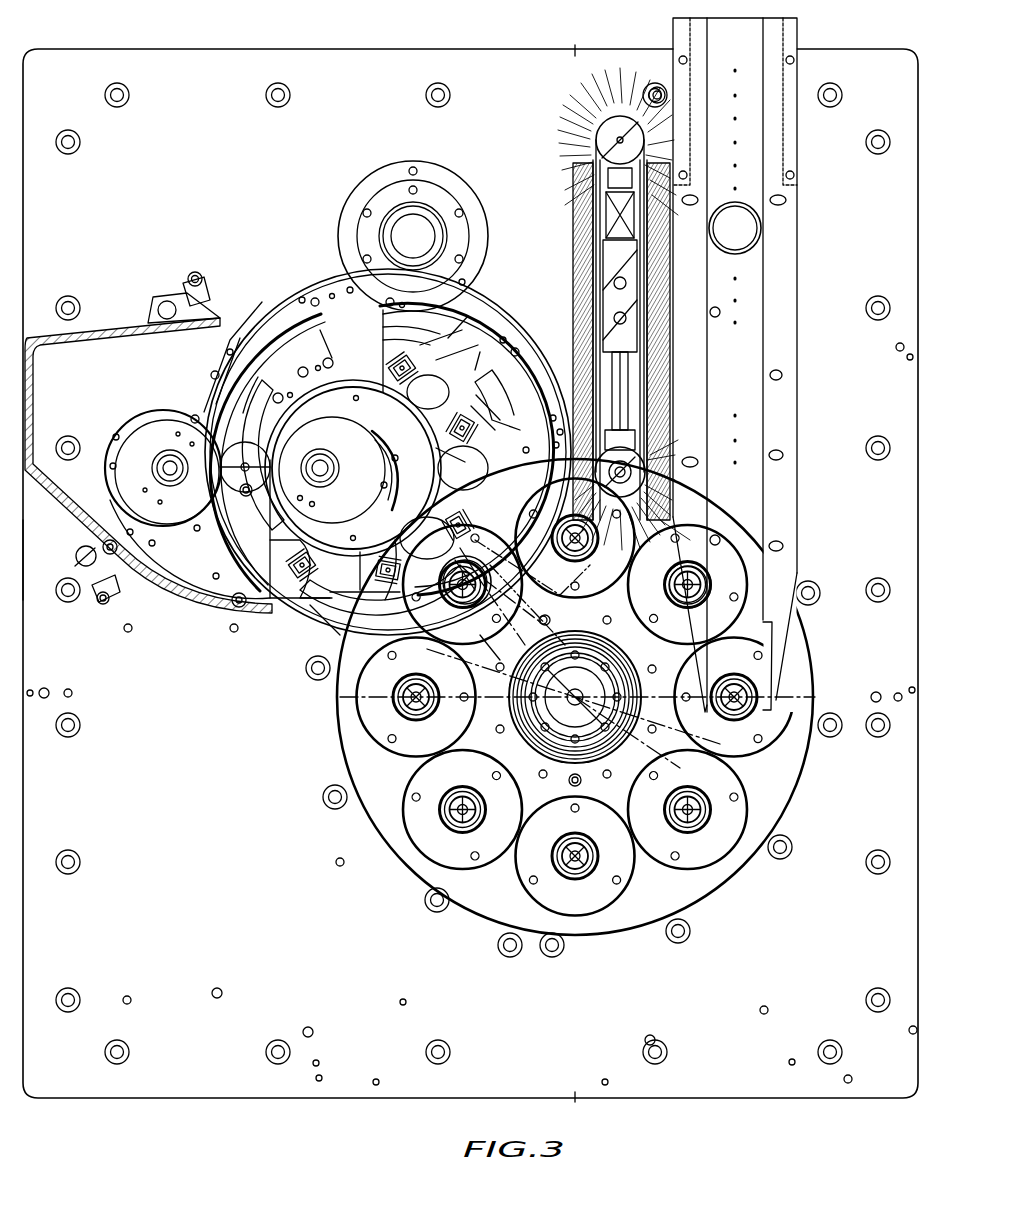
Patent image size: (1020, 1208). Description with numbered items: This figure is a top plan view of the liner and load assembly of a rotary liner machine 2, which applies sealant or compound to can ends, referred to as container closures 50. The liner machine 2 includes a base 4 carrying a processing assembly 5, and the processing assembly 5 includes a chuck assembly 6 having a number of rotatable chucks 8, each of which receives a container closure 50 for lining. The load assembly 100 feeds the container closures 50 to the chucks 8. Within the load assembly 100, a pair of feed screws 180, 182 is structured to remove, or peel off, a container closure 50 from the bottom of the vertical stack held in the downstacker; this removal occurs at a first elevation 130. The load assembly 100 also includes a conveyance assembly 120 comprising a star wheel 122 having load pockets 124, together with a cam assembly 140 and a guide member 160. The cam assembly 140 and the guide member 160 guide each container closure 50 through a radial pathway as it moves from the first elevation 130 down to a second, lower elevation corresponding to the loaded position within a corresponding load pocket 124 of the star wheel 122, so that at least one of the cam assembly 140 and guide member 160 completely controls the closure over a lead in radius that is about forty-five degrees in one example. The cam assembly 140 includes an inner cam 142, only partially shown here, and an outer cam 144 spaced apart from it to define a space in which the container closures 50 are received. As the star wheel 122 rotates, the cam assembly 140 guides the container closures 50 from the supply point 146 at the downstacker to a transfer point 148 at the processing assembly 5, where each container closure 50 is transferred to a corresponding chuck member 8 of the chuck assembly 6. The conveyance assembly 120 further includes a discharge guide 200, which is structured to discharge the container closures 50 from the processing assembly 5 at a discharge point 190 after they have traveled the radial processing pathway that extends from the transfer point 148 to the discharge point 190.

The liner machine 2 is at (298, 1144).
The base 4 is at (22, 572).
The processing assembly 5 is at (712, 912).
The chuck assembly 6 is at (400, 882).
The rotatable chuck 8 is at (420, 780).
The container closure 50 is at (745, 230).
The load assembly 100 is at (256, 230).
The conveyance assembly 120 is at (260, 642).
The star wheel 122 is at (512, 432).
The load pocket 124 is at (440, 400).
The first elevation 130 is at (624, 309).
The cam assembly 140 is at (497, 285).
The inner cam 142 is at (380, 392).
The outer cam 144 is at (482, 322).
The supply point 146 is at (242, 500).
The transfer point 148 is at (550, 618).
The guide member 160 is at (258, 378).
The feed screw 180 is at (338, 498).
The feed screw 182 is at (138, 450).
The discharge point 190 is at (800, 690).
The discharge guide 200 is at (784, 290).